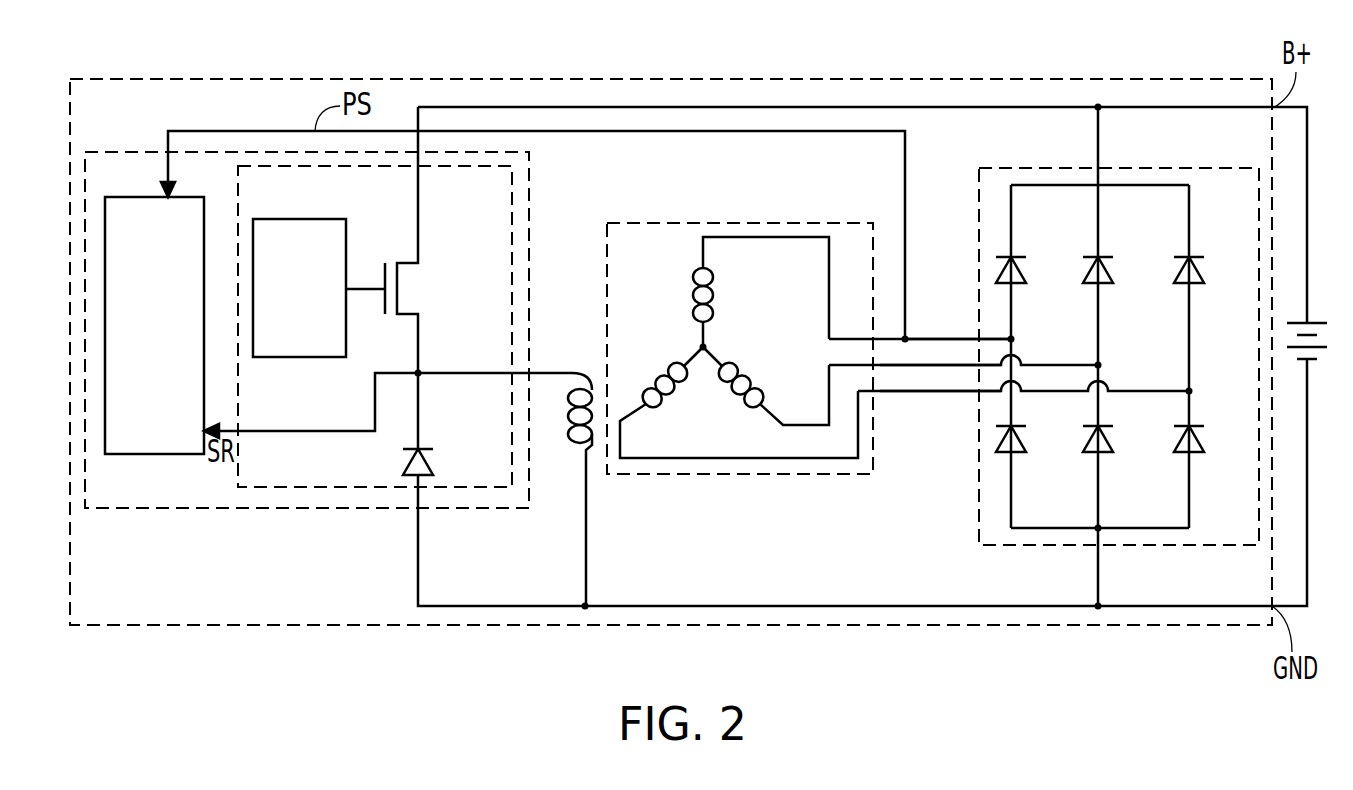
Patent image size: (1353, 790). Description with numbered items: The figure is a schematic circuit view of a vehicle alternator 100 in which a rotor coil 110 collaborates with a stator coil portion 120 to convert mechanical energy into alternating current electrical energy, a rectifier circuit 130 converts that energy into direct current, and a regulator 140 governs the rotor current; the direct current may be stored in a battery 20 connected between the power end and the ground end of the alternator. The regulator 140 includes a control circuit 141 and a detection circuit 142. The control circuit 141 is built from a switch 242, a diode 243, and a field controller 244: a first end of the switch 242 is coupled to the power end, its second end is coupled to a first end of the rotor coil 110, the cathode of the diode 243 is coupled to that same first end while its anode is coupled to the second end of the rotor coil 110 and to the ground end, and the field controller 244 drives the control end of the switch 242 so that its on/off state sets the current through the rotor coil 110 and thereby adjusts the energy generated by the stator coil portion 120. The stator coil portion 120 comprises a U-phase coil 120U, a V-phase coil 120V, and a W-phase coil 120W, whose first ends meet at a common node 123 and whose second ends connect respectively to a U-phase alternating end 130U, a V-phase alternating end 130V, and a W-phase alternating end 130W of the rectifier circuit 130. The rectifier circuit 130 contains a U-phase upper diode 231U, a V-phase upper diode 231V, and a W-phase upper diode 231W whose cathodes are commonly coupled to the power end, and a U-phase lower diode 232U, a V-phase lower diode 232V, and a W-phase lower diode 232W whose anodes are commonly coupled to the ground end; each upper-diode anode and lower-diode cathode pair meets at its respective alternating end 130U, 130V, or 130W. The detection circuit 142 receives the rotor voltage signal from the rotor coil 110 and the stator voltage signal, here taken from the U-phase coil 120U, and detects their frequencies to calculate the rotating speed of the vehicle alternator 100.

The vehicle alternator 100 is at (1158, 79).
The rotor coil 110 is at (575, 447).
The stator coil portion 120 is at (752, 223).
The U-phase coil 120U is at (761, 292).
The V-phase coil 120V is at (766, 382).
The W-phase coil 120W is at (739, 402).
The common node 123 is at (703, 347).
The rectifier circuit 130 is at (1168, 168).
The U-phase alternating end 130U is at (978, 339).
The V-phase alternating end 130V is at (977, 366).
The W-phase alternating end 130W is at (977, 393).
The regulator 140 is at (240, 509).
The control circuit 141 is at (323, 488).
The detection circuit 142 is at (167, 455).
The U-phase upper diode 231U is at (1033, 290).
The V-phase upper diode 231V is at (1120, 290).
The W-phase upper diode 231W is at (1213, 290).
The U-phase lower diode 232U is at (1033, 459).
The V-phase lower diode 232V is at (1120, 459).
The W-phase lower diode 232W is at (1213, 459).
The switch 242 is at (417, 290).
The diode 243 is at (428, 448).
The field controller 244 is at (311, 219).
The battery 20 is at (1326, 335).